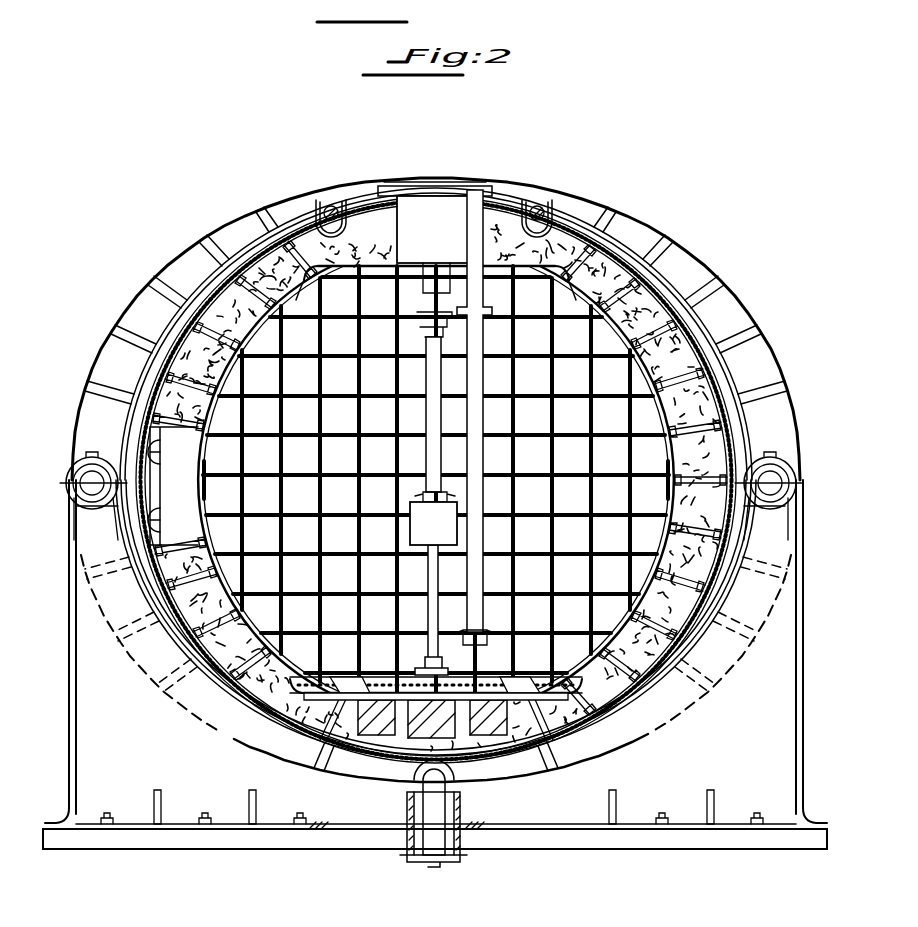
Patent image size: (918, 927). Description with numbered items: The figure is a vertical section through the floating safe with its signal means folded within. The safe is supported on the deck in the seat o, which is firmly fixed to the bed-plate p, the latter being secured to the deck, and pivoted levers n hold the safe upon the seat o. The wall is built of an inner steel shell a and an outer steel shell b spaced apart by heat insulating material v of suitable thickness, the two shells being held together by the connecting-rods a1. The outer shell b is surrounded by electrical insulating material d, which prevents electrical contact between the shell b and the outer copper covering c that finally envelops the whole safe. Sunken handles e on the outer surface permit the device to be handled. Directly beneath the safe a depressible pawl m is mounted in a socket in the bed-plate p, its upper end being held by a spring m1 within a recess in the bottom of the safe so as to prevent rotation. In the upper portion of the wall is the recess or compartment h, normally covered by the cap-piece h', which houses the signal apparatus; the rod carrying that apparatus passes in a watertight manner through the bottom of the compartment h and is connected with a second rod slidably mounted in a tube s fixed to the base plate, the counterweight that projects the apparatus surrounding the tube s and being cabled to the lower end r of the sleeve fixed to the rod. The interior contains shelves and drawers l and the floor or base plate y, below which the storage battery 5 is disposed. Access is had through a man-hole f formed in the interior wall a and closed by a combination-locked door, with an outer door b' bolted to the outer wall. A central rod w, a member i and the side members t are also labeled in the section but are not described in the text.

The pivoted lever n is at (262, 232).
The outer steel shell b is at (436, 474).
The outer copper covering c is at (172, 338).
The electrical insulating material d is at (135, 390).
The sunken handle e is at (331, 206).
The cap-piece h' is at (435, 174).
The compartment h is at (438, 266).
The inner steel shell a is at (356, 280).
The connecting-rod a1 is at (240, 365).
The man-hole f is at (174, 486).
The outer door b' is at (169, 486).
The heat insulating material v is at (433, 315).
The shelves and drawers l is at (436, 479).
The floor y is at (345, 682).
The storage battery 5 is at (390, 690).
The vertical rod w is at (475, 431).
The tube s is at (428, 580).
The lower end of sleeve r is at (422, 496).
The central box i is at (433, 523).
The trunnion bearings t is at (80, 483).
The seat o is at (436, 663).
The depressible pawl m is at (430, 782).
The spring m1 is at (462, 814).
The bed-plate p is at (246, 838).